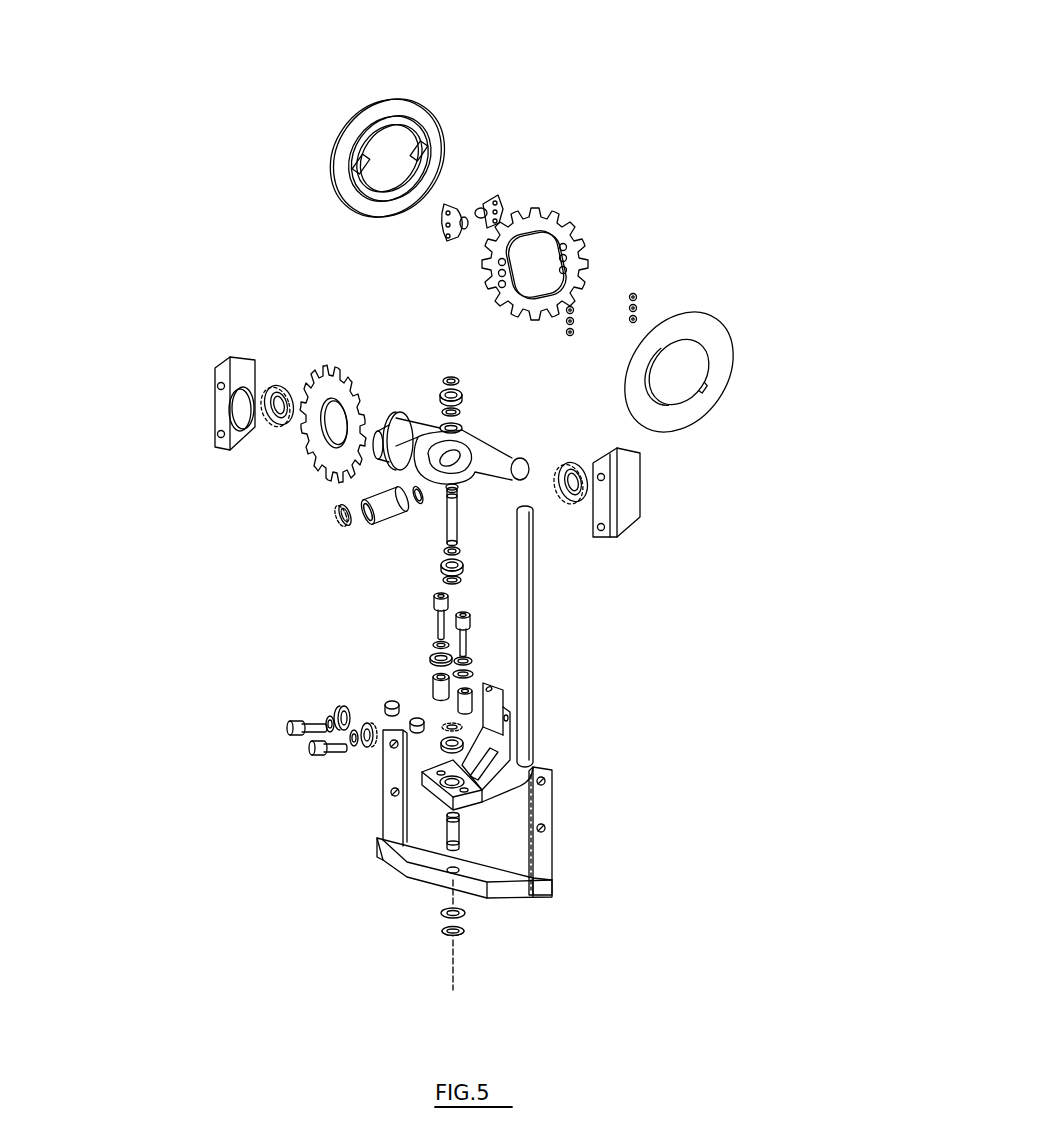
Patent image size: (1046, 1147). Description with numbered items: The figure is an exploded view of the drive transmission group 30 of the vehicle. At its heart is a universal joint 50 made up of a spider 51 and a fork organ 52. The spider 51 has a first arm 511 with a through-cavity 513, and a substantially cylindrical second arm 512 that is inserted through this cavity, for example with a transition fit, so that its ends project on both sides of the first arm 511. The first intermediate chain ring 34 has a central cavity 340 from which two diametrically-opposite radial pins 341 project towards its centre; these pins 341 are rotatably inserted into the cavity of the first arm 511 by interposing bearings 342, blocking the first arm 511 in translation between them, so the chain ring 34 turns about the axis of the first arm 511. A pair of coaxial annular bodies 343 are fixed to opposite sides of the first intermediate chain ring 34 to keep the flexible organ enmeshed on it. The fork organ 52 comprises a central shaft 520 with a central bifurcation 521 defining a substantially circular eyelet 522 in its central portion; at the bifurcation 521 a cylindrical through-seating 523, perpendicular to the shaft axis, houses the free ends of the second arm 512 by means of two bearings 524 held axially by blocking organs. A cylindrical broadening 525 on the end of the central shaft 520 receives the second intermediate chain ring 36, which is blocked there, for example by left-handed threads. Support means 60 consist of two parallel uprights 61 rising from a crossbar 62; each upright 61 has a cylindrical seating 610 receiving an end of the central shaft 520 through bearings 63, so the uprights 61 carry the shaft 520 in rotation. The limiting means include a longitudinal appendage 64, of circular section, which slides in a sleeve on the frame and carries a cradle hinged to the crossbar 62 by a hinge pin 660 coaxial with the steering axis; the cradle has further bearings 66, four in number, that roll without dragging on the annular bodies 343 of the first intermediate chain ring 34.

The drive transmission group 30 is at (190, 105).
The annular bodies 343 is at (412, 100).
The radial pins 341 is at (447, 213).
The first intermediate chain ring 34 is at (560, 223).
The central cavity 340 is at (583, 253).
The uprights 61 is at (223, 363).
The cylindrical seating 610 is at (243, 395).
The bearings 63 is at (273, 390).
The second intermediate chain ring 36 is at (323, 377).
The cylindrical broadening 525 is at (380, 443).
The fork organ 52 is at (467, 440).
The central bifurcation 521 is at (427, 433).
The central shaft 520 is at (505, 460).
The universal joint 50 is at (493, 403).
The eyelet 522 is at (447, 473).
The cylindrical through-seating 523 is at (445, 410).
The bearings 524 is at (463, 392).
The second arm 512 is at (453, 523).
The through-cavity 513 is at (383, 508).
The first arm 511 is at (347, 513).
The bearings 342 is at (362, 520).
The spider 51 is at (393, 537).
The longitudinal appendage 64 is at (525, 648).
The further bearings 66 is at (433, 672).
The support means 60 is at (600, 717).
The crossbar 62 is at (507, 883).
The hinge pin 660 is at (450, 833).